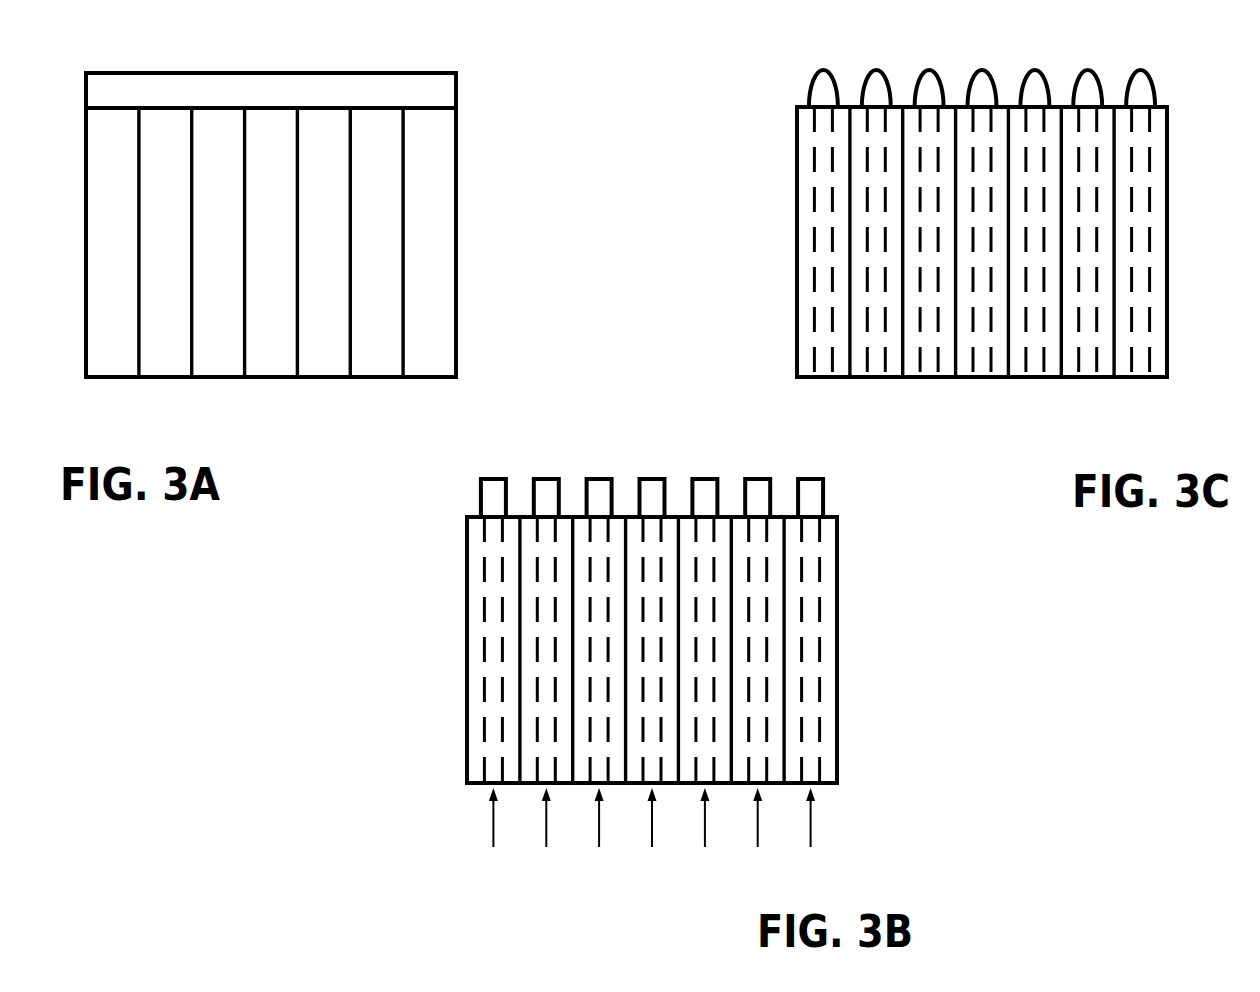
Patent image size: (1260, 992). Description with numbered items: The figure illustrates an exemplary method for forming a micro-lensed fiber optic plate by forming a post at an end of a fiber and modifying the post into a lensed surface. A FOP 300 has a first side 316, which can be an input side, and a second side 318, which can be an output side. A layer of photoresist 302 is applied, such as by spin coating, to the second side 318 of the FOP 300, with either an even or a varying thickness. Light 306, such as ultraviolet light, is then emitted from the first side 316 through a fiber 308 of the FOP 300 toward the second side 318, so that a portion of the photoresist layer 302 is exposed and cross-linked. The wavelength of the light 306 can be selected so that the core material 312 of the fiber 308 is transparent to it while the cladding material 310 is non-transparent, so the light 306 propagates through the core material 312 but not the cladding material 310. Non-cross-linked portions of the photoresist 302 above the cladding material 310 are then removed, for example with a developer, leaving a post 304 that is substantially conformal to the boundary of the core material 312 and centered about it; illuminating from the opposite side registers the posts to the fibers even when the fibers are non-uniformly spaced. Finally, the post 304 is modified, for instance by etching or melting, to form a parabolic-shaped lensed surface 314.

In FIG. 3A, the FOP 300 is at (542, 160).
In FIG. 3B, the FOP 300 is at (902, 597).
In FIG. 3C, the FOP 300 is at (1194, 154).
In FIG. 3A, the layer of photoresist 302 is at (86, 90).
In FIG. 3B, the post 304 is at (482, 500).
In FIG. 3B, the light 306 is at (632, 820).
In FIG. 3B, the fiber 308 is at (466, 607).
In FIG. 3C, the fiber 308 is at (797, 192).
In FIG. 3B, the cladding material 310 is at (470, 697).
In FIG. 3B, the core material 312 is at (487, 750).
In FIG. 3C, the lensed surface 314 is at (809, 88).
In FIG. 3A, the first side 316 is at (291, 390).
In FIG. 3A, the second side 318 is at (274, 102).